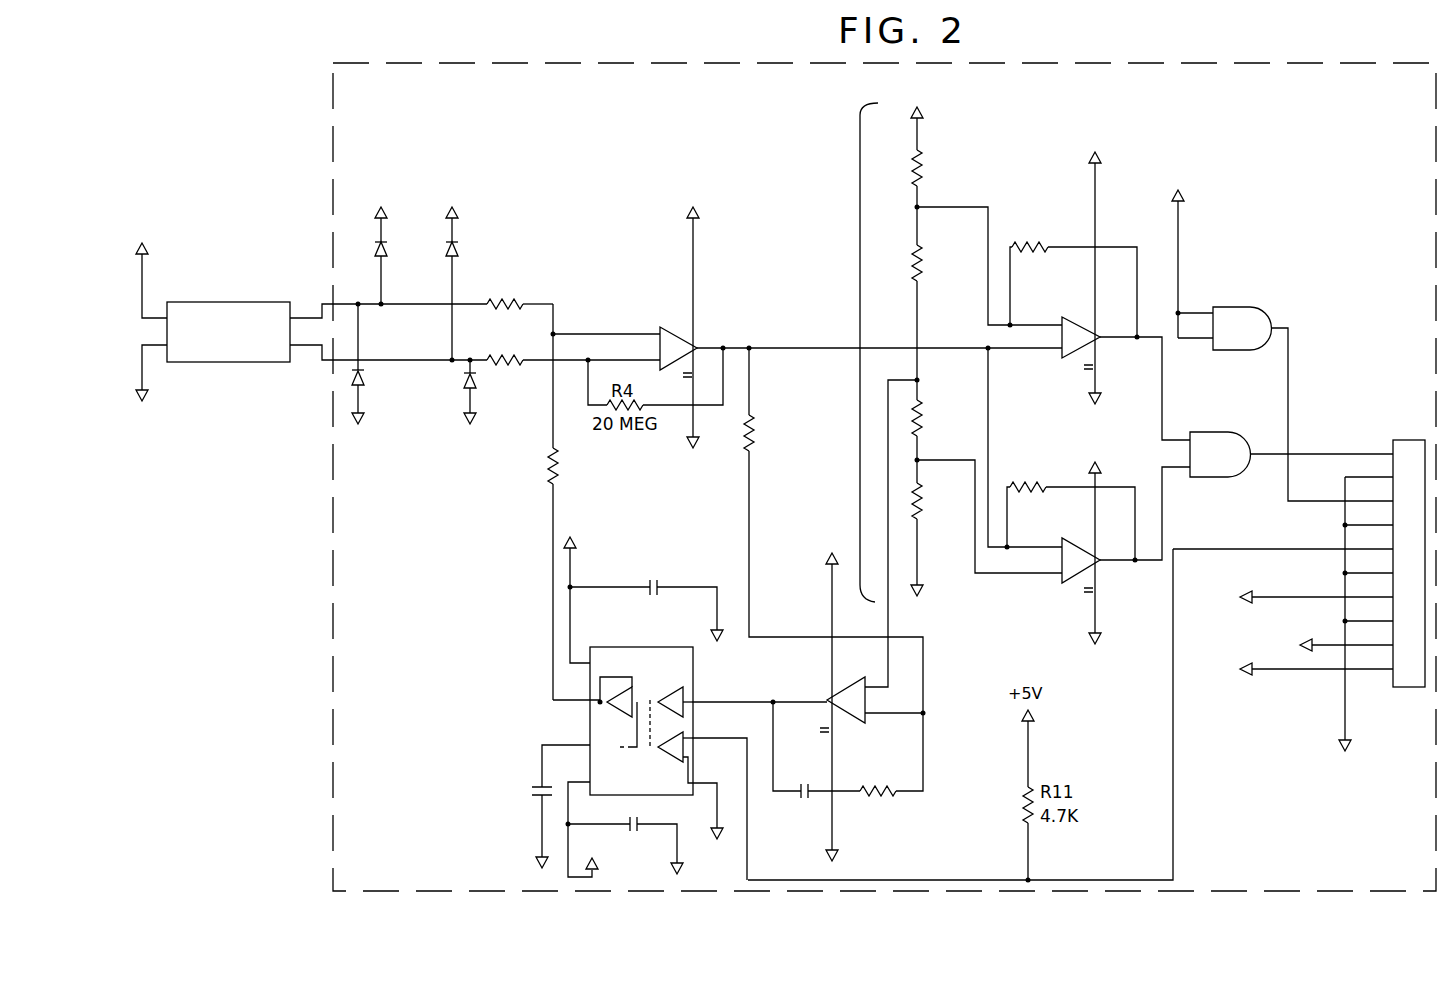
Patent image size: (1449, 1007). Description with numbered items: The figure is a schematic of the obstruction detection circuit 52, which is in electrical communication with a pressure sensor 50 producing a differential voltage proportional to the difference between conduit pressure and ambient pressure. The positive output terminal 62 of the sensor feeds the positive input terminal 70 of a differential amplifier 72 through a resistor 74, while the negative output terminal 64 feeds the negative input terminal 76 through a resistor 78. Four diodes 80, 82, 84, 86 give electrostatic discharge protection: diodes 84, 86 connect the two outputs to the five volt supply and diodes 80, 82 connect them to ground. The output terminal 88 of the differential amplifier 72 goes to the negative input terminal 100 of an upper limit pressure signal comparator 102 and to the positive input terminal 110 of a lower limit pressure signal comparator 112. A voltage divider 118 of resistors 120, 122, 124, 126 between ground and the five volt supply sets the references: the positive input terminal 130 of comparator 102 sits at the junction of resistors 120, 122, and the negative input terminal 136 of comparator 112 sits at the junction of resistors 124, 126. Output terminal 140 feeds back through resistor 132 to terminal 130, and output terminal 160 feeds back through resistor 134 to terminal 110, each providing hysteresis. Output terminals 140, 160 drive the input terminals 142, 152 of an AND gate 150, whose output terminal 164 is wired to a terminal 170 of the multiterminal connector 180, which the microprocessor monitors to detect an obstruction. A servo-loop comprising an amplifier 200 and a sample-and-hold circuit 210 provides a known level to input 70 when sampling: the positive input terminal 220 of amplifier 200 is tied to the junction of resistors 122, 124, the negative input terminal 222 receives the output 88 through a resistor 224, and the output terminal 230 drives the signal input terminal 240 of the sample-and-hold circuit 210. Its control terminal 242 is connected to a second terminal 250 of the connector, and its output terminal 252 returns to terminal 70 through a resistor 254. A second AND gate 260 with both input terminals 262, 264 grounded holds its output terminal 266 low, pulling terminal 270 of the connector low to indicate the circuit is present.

The pressure sensor 50 is at (212, 376).
The obstruction detection circuit 52 is at (803, 136).
The positive output terminal 62 is at (305, 312).
The negative output terminal 64 is at (300, 348).
The positive input terminal 70 is at (660, 328).
The differential amplifier 72 is at (700, 330).
The resistor 74 is at (520, 306).
The negative input terminal 76 is at (590, 362).
The resistor 78 is at (526, 359).
The diode 80 is at (352, 390).
The diode 82 is at (466, 396).
The diode 84 is at (385, 250).
The diode 86 is at (449, 250).
The output terminal 88 is at (732, 353).
The negative input terminal 100 is at (1035, 351).
The upper limit pressure signal comparator 102 is at (1103, 322).
The positive input terminal 110 is at (1022, 549).
The lower limit pressure signal comparator 112 is at (1103, 566).
The voltage divider 118 is at (858, 322).
The resistor 120 is at (913, 160).
The resistor 122 is at (914, 264).
The resistor 124 is at (913, 410).
The resistor 126 is at (923, 521).
The positive input terminal 130 is at (1022, 323).
The resistor 132 is at (1076, 208).
The resistor 134 is at (1059, 457).
The negative input terminal 136 is at (1031, 576).
The output terminal 140 is at (1106, 339).
The input terminal 142 is at (1170, 436).
The AND gate 150 is at (1236, 479).
The input terminal 152 is at (1170, 470).
The output terminal 160 is at (1122, 562).
The output terminal 164 is at (1272, 452).
The terminal 170 is at (1390, 454).
The multiterminal connector 180 is at (1430, 461).
The amplifier 200 is at (846, 735).
The sample-and-hold circuit 210 is at (704, 680).
The positive input terminal 220 is at (872, 680).
The negative input terminal 222 is at (908, 715).
The resistor 224 is at (745, 442).
The output terminal 230 is at (773, 703).
The signal input terminal 240 is at (727, 701).
The control terminal 242 is at (771, 854).
The second terminal 250 is at (1362, 552).
The output terminal 252 is at (552, 701).
The resistor 254 is at (548, 466).
The second AND gate 260 is at (1263, 300).
The input terminal 262 is at (1188, 312).
The input terminal 264 is at (1186, 341).
The output terminal 266 is at (1290, 327).
The terminal 270 is at (1390, 452).